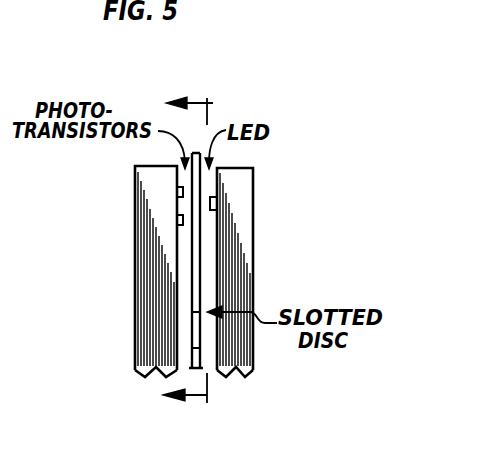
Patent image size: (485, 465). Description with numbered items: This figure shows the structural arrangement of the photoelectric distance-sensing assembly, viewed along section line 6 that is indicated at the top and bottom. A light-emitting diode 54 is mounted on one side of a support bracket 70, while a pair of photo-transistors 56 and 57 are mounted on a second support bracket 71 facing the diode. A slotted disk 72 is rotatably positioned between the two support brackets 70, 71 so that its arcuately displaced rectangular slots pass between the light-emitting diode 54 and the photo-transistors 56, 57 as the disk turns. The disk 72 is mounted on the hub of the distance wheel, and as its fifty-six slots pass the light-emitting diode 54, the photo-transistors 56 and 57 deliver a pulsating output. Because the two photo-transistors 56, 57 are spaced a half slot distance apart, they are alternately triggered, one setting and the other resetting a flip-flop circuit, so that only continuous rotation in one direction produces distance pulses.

The section line 6- 6 is at (188, 249).
The light-emitting diode 54 is at (260, 272).
The photo-transistor 56 is at (177, 192).
The photo-transistor 57 is at (177, 218).
The support bracket 70 is at (240, 268).
The second support bracket 71 is at (150, 322).
The slotted disk 72 is at (196, 348).